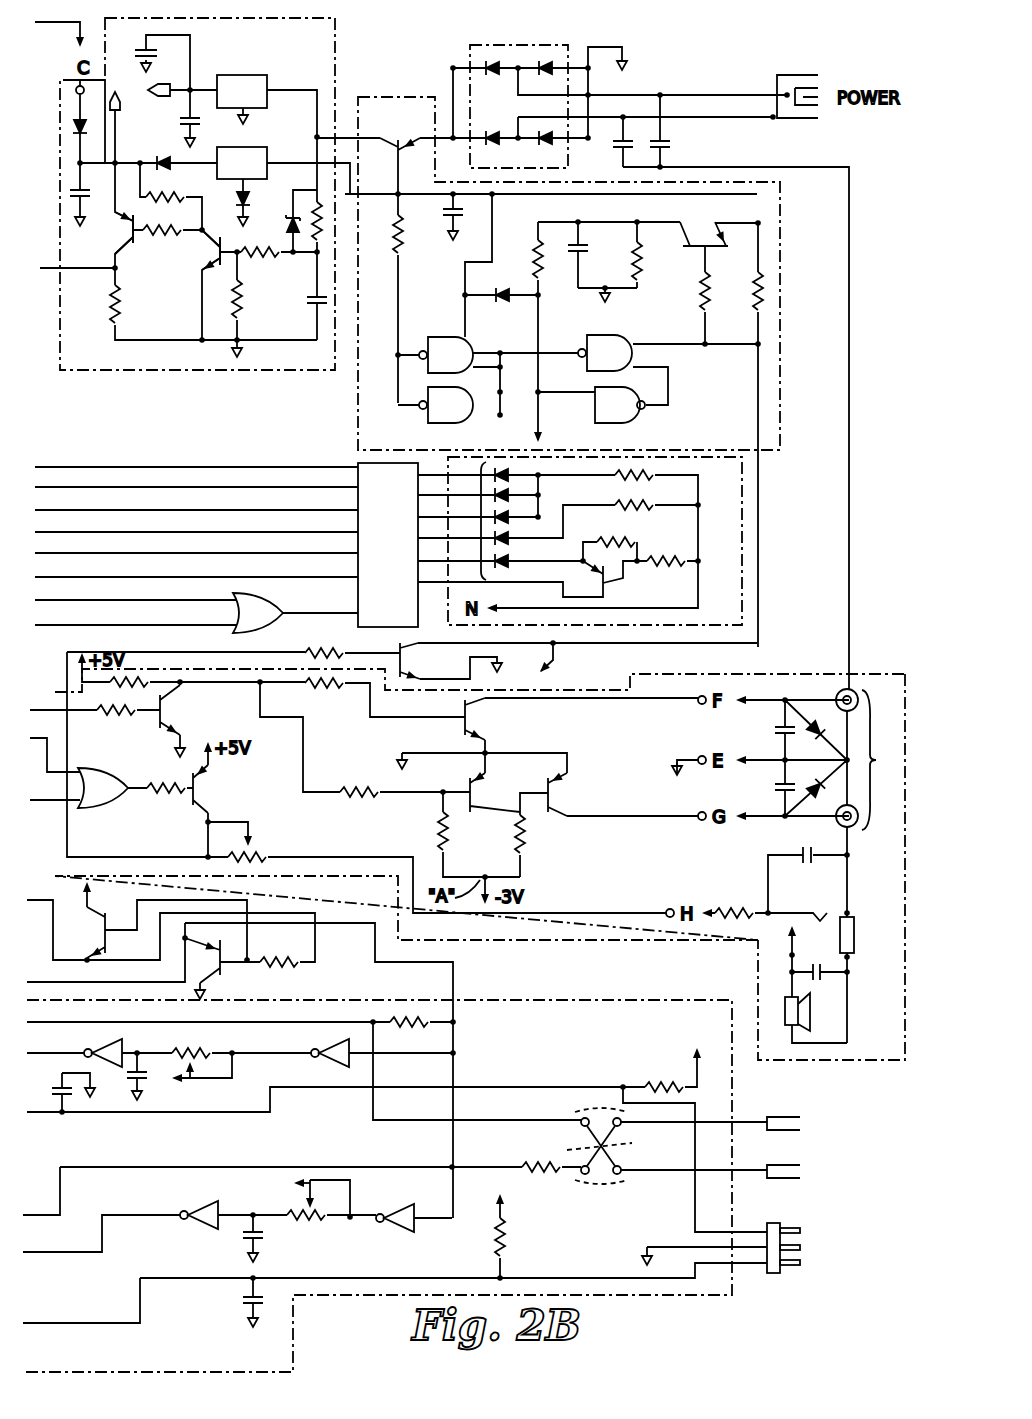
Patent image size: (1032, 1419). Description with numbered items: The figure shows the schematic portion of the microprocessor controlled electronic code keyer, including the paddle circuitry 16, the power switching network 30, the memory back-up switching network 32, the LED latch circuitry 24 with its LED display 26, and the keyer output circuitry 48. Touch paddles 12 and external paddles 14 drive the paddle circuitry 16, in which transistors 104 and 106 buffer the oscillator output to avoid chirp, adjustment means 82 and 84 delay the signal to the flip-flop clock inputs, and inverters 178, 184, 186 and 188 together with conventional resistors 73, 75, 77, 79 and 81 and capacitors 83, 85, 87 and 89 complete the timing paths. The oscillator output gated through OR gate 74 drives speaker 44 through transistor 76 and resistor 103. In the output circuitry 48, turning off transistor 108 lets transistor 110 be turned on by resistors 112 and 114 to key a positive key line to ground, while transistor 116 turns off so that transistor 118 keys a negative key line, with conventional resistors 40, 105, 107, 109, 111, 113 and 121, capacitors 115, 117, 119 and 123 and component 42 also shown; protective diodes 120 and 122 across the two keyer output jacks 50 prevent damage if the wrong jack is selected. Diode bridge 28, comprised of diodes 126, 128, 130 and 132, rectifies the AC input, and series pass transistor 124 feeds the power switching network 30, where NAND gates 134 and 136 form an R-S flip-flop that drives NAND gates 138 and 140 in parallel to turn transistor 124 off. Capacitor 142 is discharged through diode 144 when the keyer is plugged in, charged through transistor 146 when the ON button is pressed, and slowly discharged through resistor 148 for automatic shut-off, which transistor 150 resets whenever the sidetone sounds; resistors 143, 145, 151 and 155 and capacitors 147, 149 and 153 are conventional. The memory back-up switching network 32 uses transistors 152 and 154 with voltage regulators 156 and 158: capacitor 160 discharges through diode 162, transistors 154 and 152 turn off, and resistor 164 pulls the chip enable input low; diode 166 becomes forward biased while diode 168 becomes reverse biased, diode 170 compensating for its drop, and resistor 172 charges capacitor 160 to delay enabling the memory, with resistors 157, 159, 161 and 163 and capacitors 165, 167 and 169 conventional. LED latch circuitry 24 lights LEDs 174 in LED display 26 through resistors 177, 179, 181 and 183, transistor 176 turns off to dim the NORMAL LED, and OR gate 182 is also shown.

The touch paddles 12 is at (781, 1115).
The external paddles 14 is at (778, 1274).
The paddle circuitry 16 is at (276, 1370).
The LED latch circuitry 24 is at (399, 560).
The LED display 26 is at (734, 490).
The diode bridge 28 is at (524, 167).
The power switching network 30 is at (739, 444).
The memory back-up switching network 32 is at (319, 48).
The resistor 40 is at (258, 840).
The resistor 42 is at (855, 950).
The speaker 44 is at (812, 1013).
The output circuitry 48 is at (891, 1057).
The keyer output jacks 50 is at (881, 760).
The resistor 73 is at (282, 960).
The OR gate 74 is at (109, 799).
The resistor 75 is at (408, 1017).
The transistor 76 is at (198, 788).
The resistor 77 is at (660, 1080).
The resistor 79 is at (508, 1240).
The resistor 81 is at (534, 1162).
The adjustment means 82 is at (207, 1052).
The capacitor 83 is at (154, 1092).
The adjustment means 84 is at (316, 1226).
The capacitor 85 is at (67, 1099).
The capacitor 87 is at (264, 1240).
The capacitor 89 is at (243, 1300).
The resistor 103 is at (172, 792).
The transistor 104 is at (103, 933).
The resistor 105 is at (120, 716).
The transistor 106 is at (202, 960).
The resistor 107 is at (358, 789).
The transistor 108 is at (163, 708).
The resistor 109 is at (440, 840).
The transistor 110 is at (470, 712).
The resistor 111 is at (314, 651).
The resistor 112 is at (120, 688).
The resistor 113 is at (526, 846).
The resistor 114 is at (320, 690).
The capacitor 115 is at (774, 730).
The transistor 116 is at (472, 793).
The capacitor 117 is at (776, 787).
The transistor 118 is at (552, 793).
The capacitor 119 is at (807, 865).
The protective diode 120 is at (826, 729).
The resistor 121 is at (748, 908).
The protective diode 122 is at (814, 796).
The capacitor 123 is at (824, 982).
The transistor 124 is at (398, 140).
The diode 126 is at (490, 60).
The diode 128 is at (487, 130).
The diode 130 is at (553, 144).
The diode 132 is at (543, 60).
The NAND gate 134 is at (620, 364).
The NAND gate 136 is at (628, 416).
The NAND gate 138 is at (461, 366).
The NAND gate 140 is at (461, 416).
The capacitor 142 is at (578, 242).
The resistor 143 is at (762, 303).
The diode 144 is at (498, 303).
The resistor 145 is at (702, 300).
The transistor 146 is at (705, 243).
The capacitor 147 is at (630, 141).
The resistor 148 is at (641, 258).
The capacitor 149 is at (665, 148).
The transistor 150 is at (404, 657).
The resistor 151 is at (535, 240).
The transistor 152 is at (115, 233).
The capacitor 153 is at (448, 212).
The transistor 154 is at (218, 250).
The resistor 155 is at (402, 243).
The voltage regulator 156 is at (255, 101).
The resistor 157 is at (243, 300).
The voltage regulator 158 is at (255, 173).
The resistor 159 is at (262, 267).
The capacitor 160 is at (313, 302).
The resistor 161 is at (160, 246).
The diode 162 is at (290, 228).
The resistor 163 is at (170, 192).
The resistor 164 is at (112, 310).
The capacitor 165 is at (78, 200).
The diode 166 is at (77, 118).
The capacitor 167 is at (142, 50).
The diode 168 is at (160, 158).
The capacitor 169 is at (180, 121).
The diode 170 is at (247, 196).
The resistor 172 is at (312, 230).
The LEDs 174 is at (478, 482).
The transistor 176 is at (590, 575).
The resistor 177 is at (616, 474).
The inverter 178 is at (94, 1052).
The resistor 179 is at (645, 500).
The resistor 181 is at (628, 540).
The OR gate 182 is at (271, 623).
The resistor 183 is at (668, 566).
The inverter 184 is at (325, 1054).
The inverter 186 is at (396, 1207).
The inverter 188 is at (196, 1207).